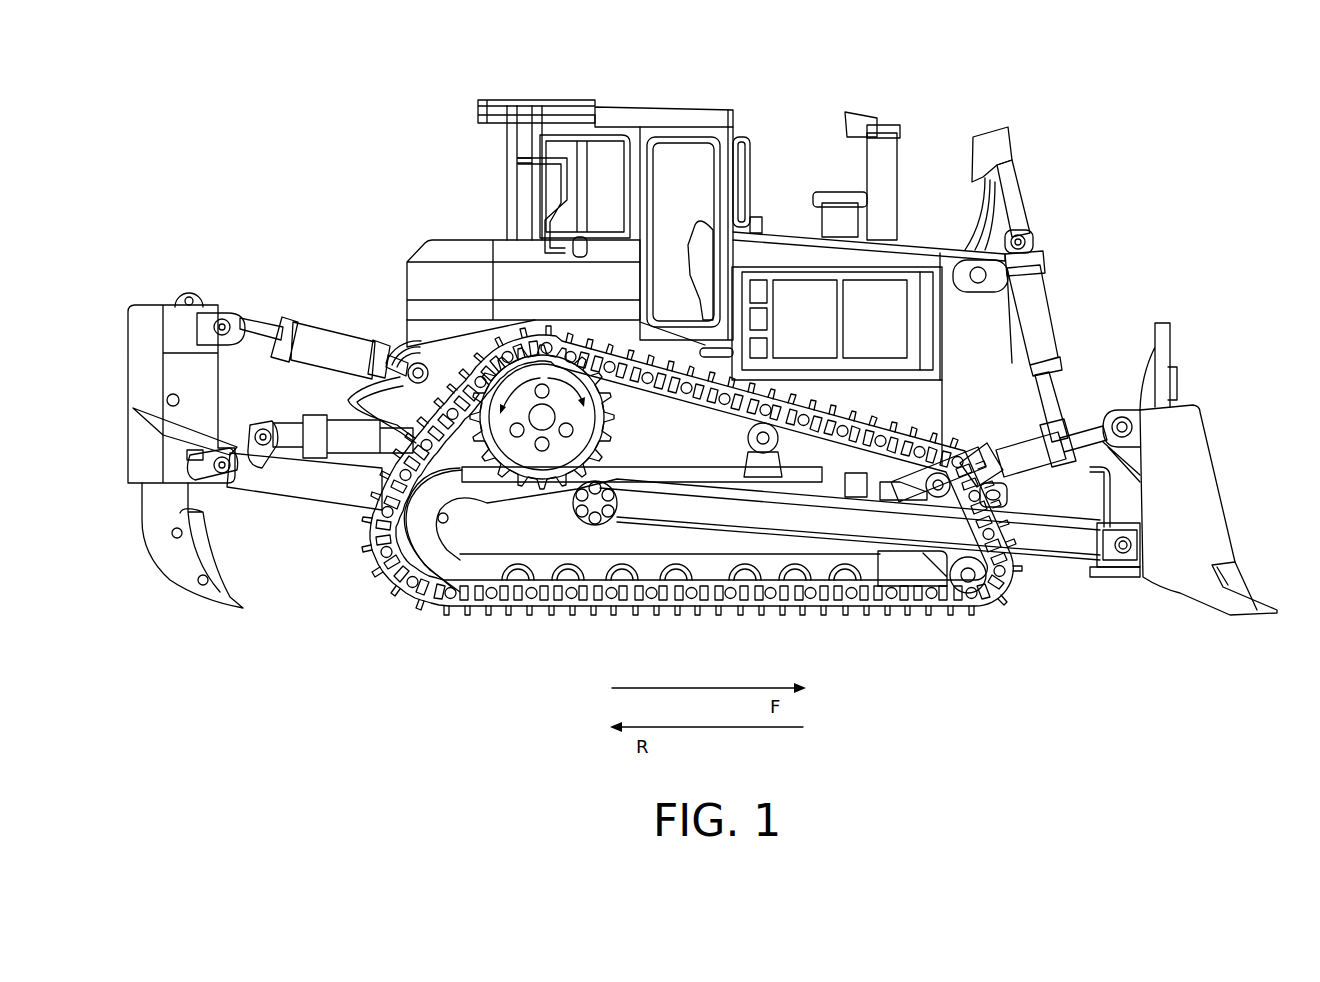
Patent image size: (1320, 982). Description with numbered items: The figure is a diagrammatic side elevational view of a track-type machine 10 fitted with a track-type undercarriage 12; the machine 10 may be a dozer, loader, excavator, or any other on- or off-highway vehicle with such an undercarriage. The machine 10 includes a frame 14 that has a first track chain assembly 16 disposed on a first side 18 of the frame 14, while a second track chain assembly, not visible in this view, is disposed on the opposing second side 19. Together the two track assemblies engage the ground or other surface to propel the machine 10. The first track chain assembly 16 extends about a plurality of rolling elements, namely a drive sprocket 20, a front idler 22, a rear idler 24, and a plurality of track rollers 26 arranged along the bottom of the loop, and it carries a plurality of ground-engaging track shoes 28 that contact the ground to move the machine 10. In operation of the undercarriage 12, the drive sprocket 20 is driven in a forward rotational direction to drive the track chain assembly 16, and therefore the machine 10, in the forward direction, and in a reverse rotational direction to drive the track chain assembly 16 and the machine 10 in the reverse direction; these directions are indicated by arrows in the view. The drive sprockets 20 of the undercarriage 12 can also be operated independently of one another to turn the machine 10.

The machine 10 is at (913, 97).
The track-type undercarriage 12 is at (385, 597).
The frame 14 is at (995, 415).
The first track chain assembly 16 is at (593, 620).
The first side 18 is at (448, 268).
The second side 19 is at (465, 237).
The drive sprocket 20 is at (596, 412).
The front idler 22 is at (967, 597).
The rear idler 24 is at (457, 597).
The track rollers 26 is at (722, 611).
The track shoes 28 is at (858, 613).